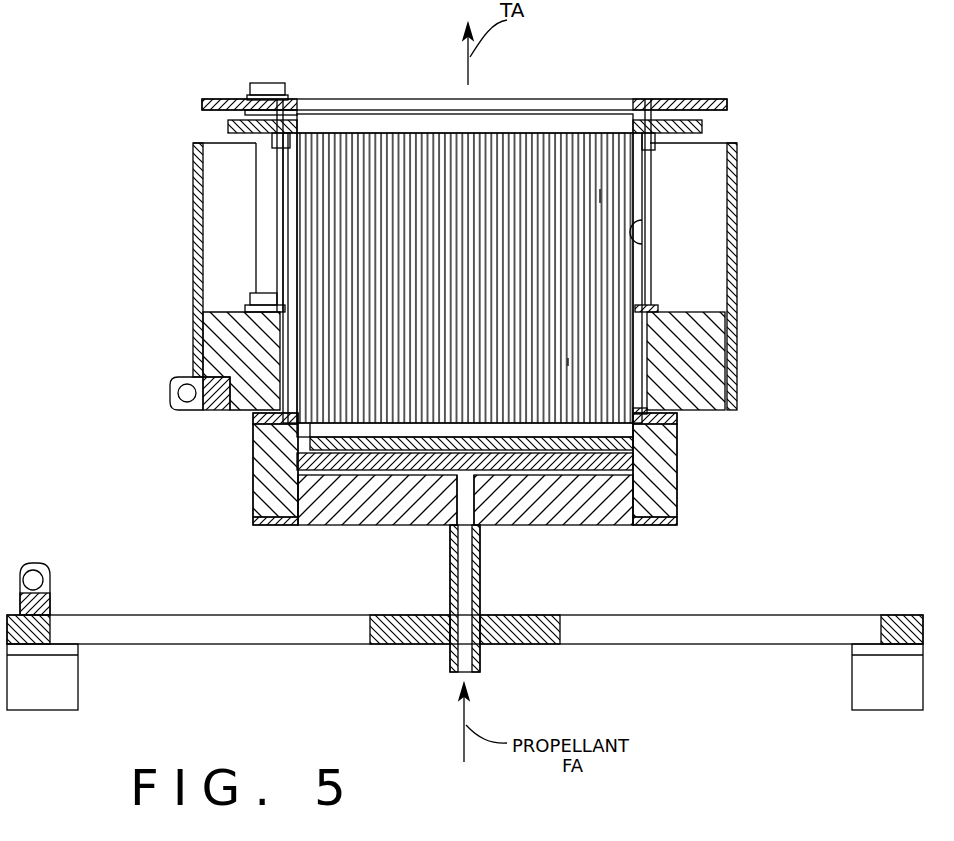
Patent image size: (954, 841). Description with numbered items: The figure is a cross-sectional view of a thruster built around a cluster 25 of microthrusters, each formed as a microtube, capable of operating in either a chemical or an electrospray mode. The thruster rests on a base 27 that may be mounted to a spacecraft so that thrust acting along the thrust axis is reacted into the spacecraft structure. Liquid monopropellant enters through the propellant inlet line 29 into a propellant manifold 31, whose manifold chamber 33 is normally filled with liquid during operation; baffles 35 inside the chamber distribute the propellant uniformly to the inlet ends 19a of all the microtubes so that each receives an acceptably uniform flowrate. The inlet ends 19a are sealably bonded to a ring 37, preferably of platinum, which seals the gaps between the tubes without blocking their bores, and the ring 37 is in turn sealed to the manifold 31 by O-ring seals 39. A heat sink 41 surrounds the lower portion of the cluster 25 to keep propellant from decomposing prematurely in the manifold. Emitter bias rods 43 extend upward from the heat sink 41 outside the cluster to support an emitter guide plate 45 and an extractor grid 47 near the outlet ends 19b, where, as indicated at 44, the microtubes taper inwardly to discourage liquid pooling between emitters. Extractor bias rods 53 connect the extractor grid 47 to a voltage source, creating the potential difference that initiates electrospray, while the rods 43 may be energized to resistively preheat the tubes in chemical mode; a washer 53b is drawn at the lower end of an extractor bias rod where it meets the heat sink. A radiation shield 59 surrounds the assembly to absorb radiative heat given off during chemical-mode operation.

The extractor grid 47 is at (217, 99).
The emitter guide plate 45 is at (230, 126).
The extractor bias rods 53 is at (277, 168).
The emitter bias rods 43 is at (256, 225).
The heat sink 41 is at (230, 340).
The propellant manifold 31 is at (253, 490).
The manifold chamber 33 is at (378, 470).
The baffles 35 is at (546, 475).
The propellant inlet line 29 is at (450, 663).
The base 27 is at (737, 245).
The inward taper of microtubes 44 is at (543, 122).
The outlet ends of microthrusters 19b is at (580, 130).
The cluster of microthrusters 25 is at (603, 195).
The radiation shield 59 is at (737, 205).
The washer 53b is at (650, 333).
The ring 37 is at (677, 422).
The O-ring seals 39 is at (677, 440).
The inlet ends of microtubes 19a is at (623, 460).